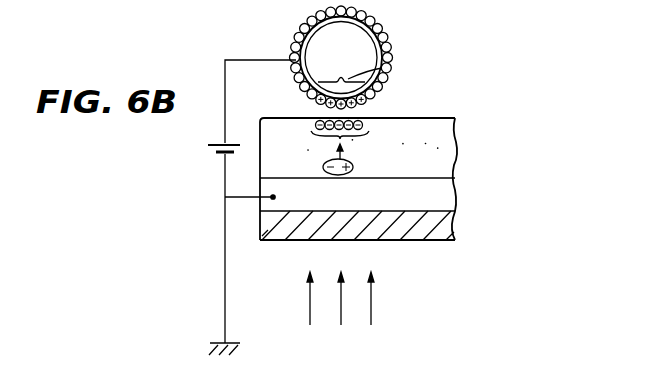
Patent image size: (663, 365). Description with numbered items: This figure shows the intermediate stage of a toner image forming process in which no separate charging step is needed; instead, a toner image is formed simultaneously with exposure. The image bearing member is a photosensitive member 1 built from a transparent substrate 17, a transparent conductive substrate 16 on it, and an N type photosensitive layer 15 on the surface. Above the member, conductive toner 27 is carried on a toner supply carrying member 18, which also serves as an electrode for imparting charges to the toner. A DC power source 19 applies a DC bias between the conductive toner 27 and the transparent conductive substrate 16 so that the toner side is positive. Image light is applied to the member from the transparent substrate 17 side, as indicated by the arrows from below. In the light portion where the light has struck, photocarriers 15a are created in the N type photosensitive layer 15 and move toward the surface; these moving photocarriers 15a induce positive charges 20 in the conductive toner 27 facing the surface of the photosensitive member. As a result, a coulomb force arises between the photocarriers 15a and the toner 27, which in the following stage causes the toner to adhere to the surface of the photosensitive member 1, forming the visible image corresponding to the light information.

The photosensitive member 1 is at (405, 180).
The N type photosensitive layer 15 is at (446, 148).
The photocarriers 15a is at (341, 139).
The transparent conductive substrate 16 is at (446, 192).
The transparent substrate 17 is at (386, 227).
The toner supply carrying member 18 is at (380, 53).
The DC power source 19 is at (209, 151).
The positive charges 20 is at (382, 68).
The conductive toner 27 is at (298, 34).